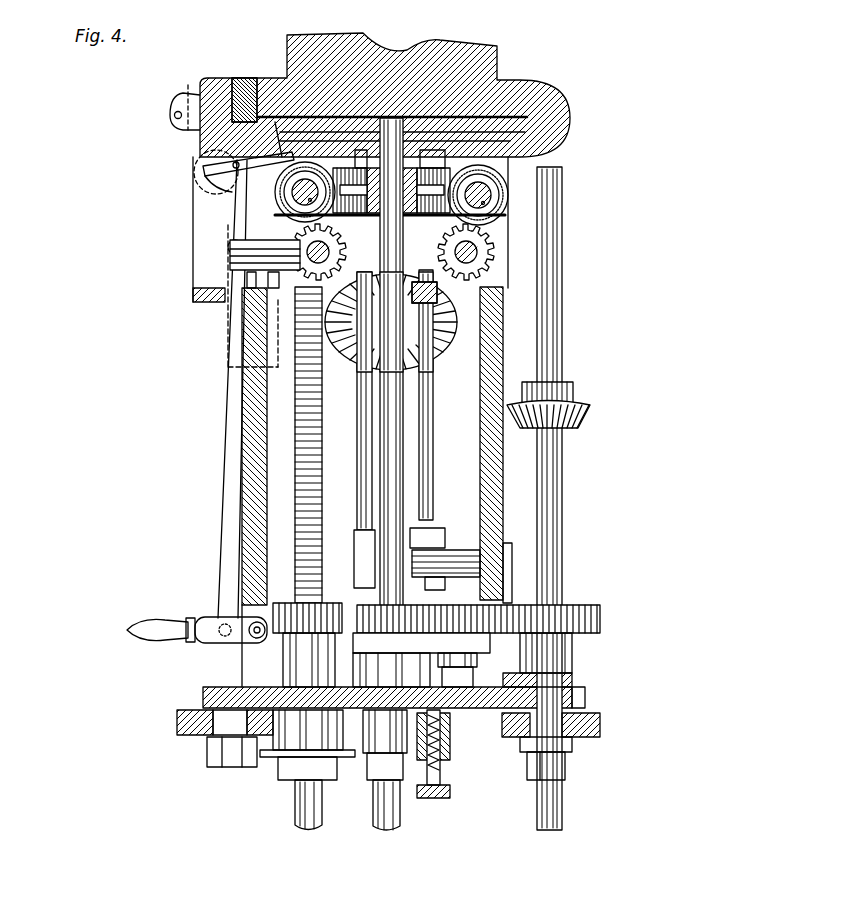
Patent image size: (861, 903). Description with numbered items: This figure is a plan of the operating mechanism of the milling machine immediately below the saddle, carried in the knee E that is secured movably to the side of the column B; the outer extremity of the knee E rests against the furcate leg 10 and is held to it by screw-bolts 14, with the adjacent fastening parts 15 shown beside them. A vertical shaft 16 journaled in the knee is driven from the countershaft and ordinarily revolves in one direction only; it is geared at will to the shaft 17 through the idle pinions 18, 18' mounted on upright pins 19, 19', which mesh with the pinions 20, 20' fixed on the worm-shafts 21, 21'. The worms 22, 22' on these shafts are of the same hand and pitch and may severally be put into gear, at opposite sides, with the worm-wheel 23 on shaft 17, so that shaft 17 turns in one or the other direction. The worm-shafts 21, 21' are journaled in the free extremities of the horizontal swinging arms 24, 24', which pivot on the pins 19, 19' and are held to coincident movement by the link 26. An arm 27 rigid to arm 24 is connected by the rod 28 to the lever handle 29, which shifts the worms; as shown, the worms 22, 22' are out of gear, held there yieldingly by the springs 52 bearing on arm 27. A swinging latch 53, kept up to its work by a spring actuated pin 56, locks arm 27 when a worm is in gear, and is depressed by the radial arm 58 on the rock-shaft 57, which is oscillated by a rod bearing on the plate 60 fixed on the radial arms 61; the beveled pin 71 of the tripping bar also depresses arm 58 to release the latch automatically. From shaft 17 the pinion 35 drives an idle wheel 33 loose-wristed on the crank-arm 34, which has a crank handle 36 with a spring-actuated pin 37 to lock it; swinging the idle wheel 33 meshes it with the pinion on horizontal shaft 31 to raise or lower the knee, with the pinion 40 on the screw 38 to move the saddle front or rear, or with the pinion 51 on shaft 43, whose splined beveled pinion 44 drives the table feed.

The column B is at (470, 52).
The knee E is at (572, 121).
The furcate leg 10 is at (600, 725).
The screw-bolts 14 is at (232, 768).
The bushing 15 is at (200, 735).
The shaft 16 is at (390, 199).
The shaft 17 is at (388, 468).
The idle pinion 18 is at (223, 487).
The idle pinion 18' is at (499, 441).
The pin 19 is at (182, 297).
The pin 19' is at (546, 278).
The pinion 20 is at (236, 293).
The pinion 20' is at (524, 232).
The worm-shaft 21 is at (262, 96).
The worm-shaft 21' is at (560, 204).
The worm 22 is at (244, 79).
The worm 22' is at (570, 95).
The worm-wheel 23 is at (352, 170).
The swinging arm 24 is at (246, 306).
The swinging arm 24' is at (524, 252).
The link 26 is at (280, 212).
The arm 27 is at (229, 252).
The rod 28 is at (226, 400).
The lever handle 29 is at (155, 622).
The horizontal shaft 31 is at (388, 830).
The idle wheel 33 is at (432, 603).
The crank-arm 34 is at (427, 660).
The pinion 35 is at (360, 605).
The crank handle 36 is at (452, 740).
The spring-actuated pin 37 is at (440, 798).
The screw 38 is at (318, 482).
The pinion 40 is at (300, 615).
The shaft 43 is at (553, 458).
The beveled pinion 44 is at (590, 414).
The pinion 51 is at (600, 618).
The spring 52 is at (238, 217).
The swinging latch 53 is at (230, 197).
The spring actuated pin 56 is at (215, 180).
The rock-shaft 57 is at (423, 425).
The radial arm 58 is at (210, 162).
The plate 60 is at (362, 515).
The radial arms 61 is at (440, 345).
The pin 71 is at (185, 97).